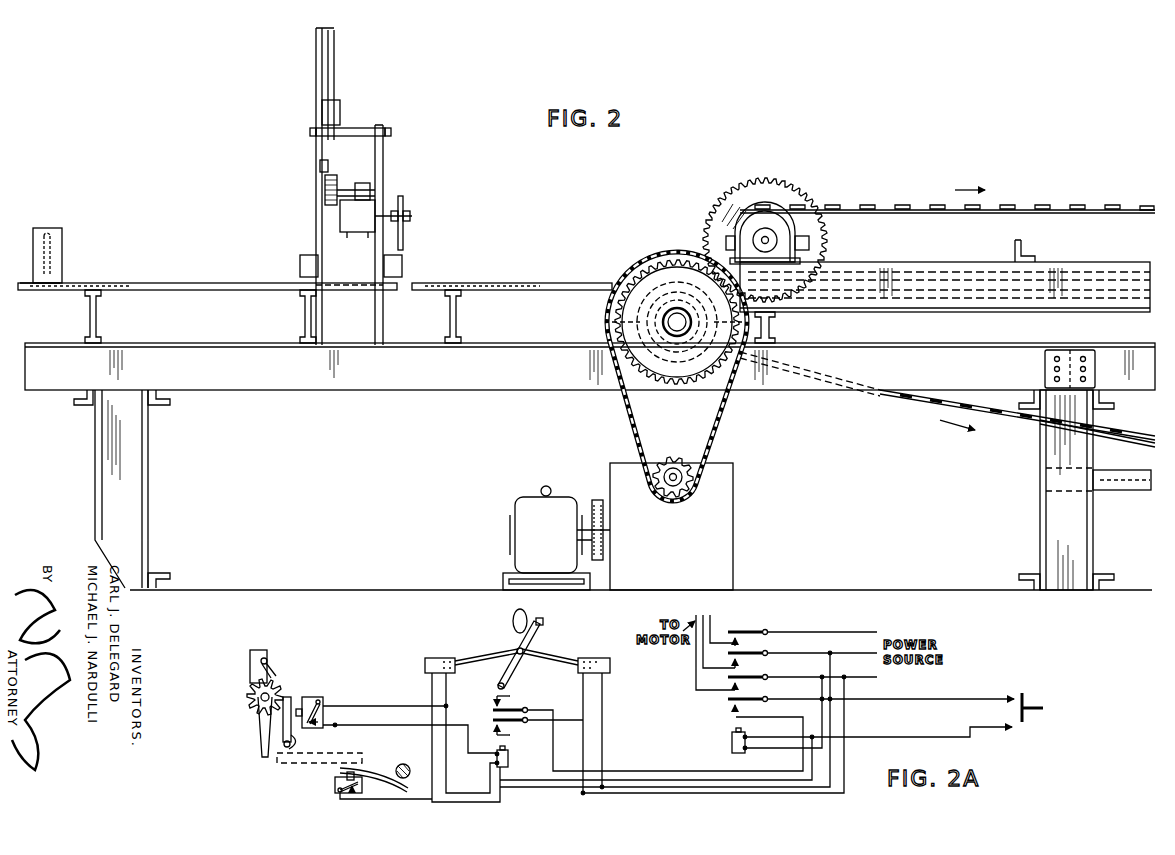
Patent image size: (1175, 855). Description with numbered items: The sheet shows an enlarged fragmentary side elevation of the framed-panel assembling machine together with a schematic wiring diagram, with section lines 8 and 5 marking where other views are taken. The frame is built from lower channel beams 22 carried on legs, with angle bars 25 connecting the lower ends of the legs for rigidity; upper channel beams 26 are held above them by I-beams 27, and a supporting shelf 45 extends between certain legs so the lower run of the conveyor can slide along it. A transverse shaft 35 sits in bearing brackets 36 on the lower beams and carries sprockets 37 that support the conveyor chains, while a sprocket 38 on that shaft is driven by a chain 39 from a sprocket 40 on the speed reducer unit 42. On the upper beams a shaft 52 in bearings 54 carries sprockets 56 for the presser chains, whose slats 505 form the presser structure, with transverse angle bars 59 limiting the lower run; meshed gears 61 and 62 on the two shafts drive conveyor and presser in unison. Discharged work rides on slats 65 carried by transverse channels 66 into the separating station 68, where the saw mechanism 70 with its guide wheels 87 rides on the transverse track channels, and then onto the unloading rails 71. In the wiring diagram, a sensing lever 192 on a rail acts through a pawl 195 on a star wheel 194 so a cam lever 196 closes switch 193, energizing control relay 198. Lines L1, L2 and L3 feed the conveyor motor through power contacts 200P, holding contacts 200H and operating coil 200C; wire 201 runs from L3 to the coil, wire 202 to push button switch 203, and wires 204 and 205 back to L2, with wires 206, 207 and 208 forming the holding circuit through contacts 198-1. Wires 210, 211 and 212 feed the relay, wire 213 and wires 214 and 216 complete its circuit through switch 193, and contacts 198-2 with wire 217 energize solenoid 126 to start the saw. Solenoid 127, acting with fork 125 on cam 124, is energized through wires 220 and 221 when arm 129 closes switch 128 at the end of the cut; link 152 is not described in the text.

In FIG. 2, the section line 8- 8 is at (410, 30).
In FIG. 2, the section line 5- 5 is at (1122, 166).
In FIG. 2, the lower channel beams 22 is at (466, 380).
In FIG. 2, the angle bars 25 is at (161, 577).
In FIG. 2, the upper channel beams 26 is at (950, 262).
In FIG. 2, the I-beams 27 is at (776, 327).
In FIG. 2, the transverse shaft 35 is at (668, 316).
In FIG. 2, the bearing brackets 36 is at (612, 329).
In FIG. 2, the sprockets 37 is at (695, 280).
In FIG. 2, the sprocket 38 is at (686, 386).
In FIG. 2, the chain 39 is at (716, 426).
In FIG. 2, the sprocket 40 is at (674, 456).
In FIG. 2, the speed reducer unit 42 is at (727, 481).
In FIG. 2, the supporting shelf 45 is at (1133, 491).
In FIG. 2, the shaft 52 is at (769, 237).
In FIG. 2, the bearings 54 is at (809, 238).
In FIG. 2, the sprockets 56 is at (758, 222).
In FIG. 2, the transverse angle bars 59 is at (1025, 250).
In FIG. 2, the gear 61 is at (653, 268).
In FIG. 2, the gear 62 is at (771, 181).
In FIG. 2, the slats 65 is at (532, 291).
In FIG. 2, the transverse channels 66 is at (461, 320).
In FIG. 2, the separating station 68 is at (411, 232).
In FIG. 2, the saw mechanism 70 is at (385, 160).
In FIG. 2, the supporting rails 71 is at (186, 283).
In FIG. 2, the solenoid 126 is at (300, 260).
In FIG. 2A, the solenoid 126 is at (610, 668).
In FIG. 2, the solenoid 127 is at (403, 260).
In FIG. 2A, the solenoid 127 is at (425, 668).
In FIG. 2, the sensing lever 192 is at (62, 250).
In FIG. 2A, the sensing lever 192 is at (259, 737).
In FIG. 2, the switch 193 is at (70, 283).
In FIG. 2A, the switch 193 is at (307, 698).
In FIG. 2, the slats 505 is at (1010, 205).
In FIG. 2A, the slidable cam 124 is at (513, 625).
In FIG. 2A, the fork 125 is at (536, 639).
In FIG. 2A, the switch 128 is at (335, 790).
In FIG. 2A, the arm 129 is at (376, 771).
In FIG. 2A, the guide wheels 87 is at (410, 764).
In FIG. 2A, the link 152 is at (294, 772).
In FIG. 2A, the toothed star wheel 194 is at (281, 692).
In FIG. 2A, the pawl 195 is at (276, 669).
In FIG. 2A, the cam lever 196 is at (308, 741).
In FIG. 2A, the control relay 198 is at (509, 758).
In FIG. 2A, the normally closed contacts 198-1 is at (494, 705).
In FIG. 2A, the normally open contacts 198-2 is at (499, 731).
In FIG. 2A, the power contacts 200P is at (757, 643).
In FIG. 2A, the holding contacts 200H is at (735, 712).
In FIG. 2A, the operating coil 200C is at (732, 736).
In FIG. 2A, the wire 201 is at (796, 753).
In FIG. 2A, the wire 202 is at (860, 743).
In FIG. 2A, the push button switch 203 is at (1024, 705).
In FIG. 2A, the wire 204 is at (860, 703).
In FIG. 2A, the wire 205 is at (830, 672).
In FIG. 2A, the wire 206 is at (812, 702).
In FIG. 2A, the wire 207 is at (621, 787).
In FIG. 2A, the wire 208 is at (659, 787).
In FIG. 2A, the wire 210 is at (750, 795).
In FIG. 2A, the wire 211 is at (543, 792).
In FIG. 2A, the wire 212 is at (503, 777).
In FIG. 2A, the wire 213 is at (383, 723).
In FIG. 2A, the wire 214 is at (383, 703).
In FIG. 2A, the wire 216 is at (845, 748).
In FIG. 2A, the wire 217 is at (603, 697).
In FIG. 2A, the wire 220 is at (447, 697).
In FIG. 2A, the wire 221 is at (472, 800).
In FIG. 2A, the line L1 is at (827, 634).
In FIG. 2A, the line L2 is at (846, 657).
In FIG. 2A, the line L3 is at (851, 682).